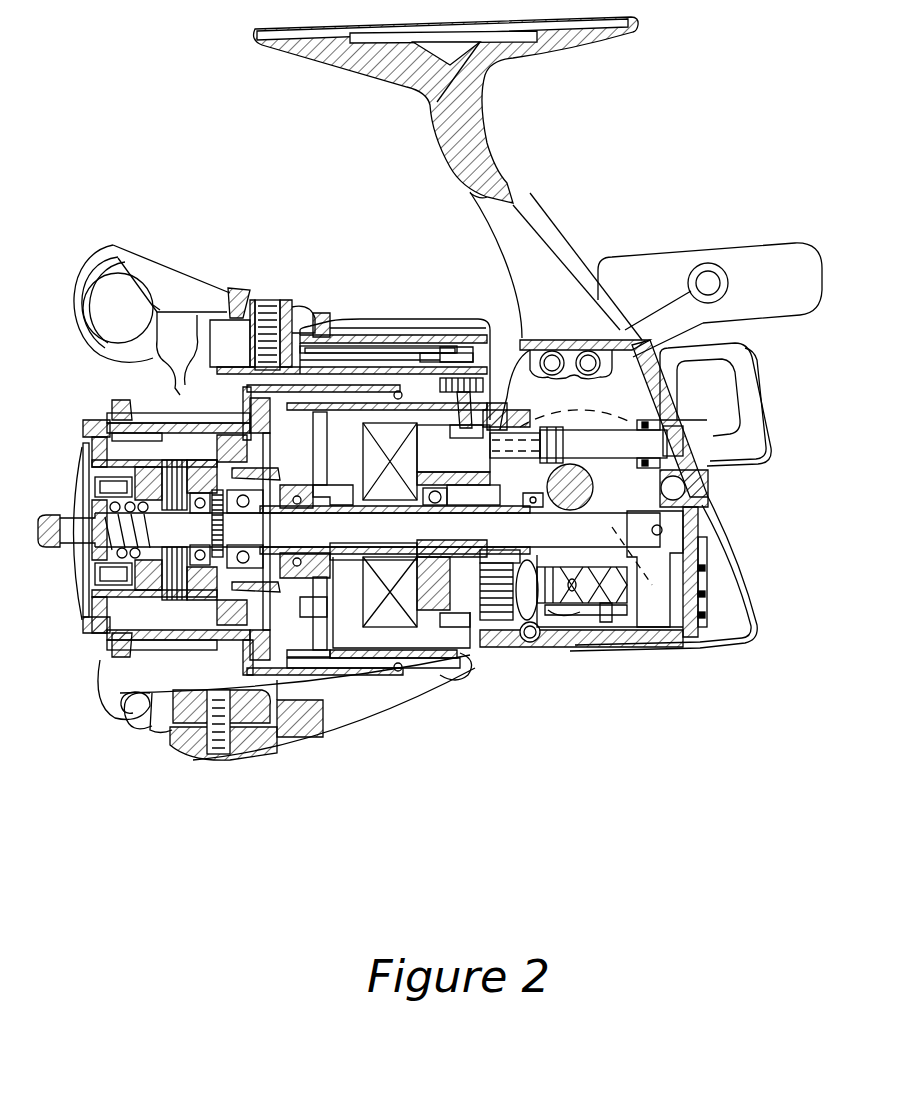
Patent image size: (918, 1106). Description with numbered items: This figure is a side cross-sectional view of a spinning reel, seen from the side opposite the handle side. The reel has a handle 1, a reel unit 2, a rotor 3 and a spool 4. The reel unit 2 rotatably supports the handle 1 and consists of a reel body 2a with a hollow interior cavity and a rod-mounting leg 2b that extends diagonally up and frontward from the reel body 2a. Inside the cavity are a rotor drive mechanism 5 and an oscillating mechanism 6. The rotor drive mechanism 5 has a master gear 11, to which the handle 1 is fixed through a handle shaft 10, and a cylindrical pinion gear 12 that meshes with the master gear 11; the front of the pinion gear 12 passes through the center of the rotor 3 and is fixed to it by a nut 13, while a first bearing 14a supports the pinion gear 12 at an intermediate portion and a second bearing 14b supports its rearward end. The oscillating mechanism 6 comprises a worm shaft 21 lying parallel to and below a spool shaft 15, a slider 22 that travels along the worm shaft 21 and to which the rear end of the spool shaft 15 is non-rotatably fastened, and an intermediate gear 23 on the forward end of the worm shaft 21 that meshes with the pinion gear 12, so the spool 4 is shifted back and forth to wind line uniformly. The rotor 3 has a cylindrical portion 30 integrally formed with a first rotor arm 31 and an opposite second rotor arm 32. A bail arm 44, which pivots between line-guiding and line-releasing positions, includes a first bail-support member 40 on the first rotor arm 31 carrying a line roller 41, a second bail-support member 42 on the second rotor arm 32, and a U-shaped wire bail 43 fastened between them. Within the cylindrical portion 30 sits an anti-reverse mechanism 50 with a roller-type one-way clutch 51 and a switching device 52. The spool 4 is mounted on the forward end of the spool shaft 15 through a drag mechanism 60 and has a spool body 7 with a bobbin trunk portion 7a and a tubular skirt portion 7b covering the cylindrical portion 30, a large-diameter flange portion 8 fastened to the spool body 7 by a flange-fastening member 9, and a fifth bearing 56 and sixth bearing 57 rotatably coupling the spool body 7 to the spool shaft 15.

The handle 1 is at (678, 298).
The reel unit 2 is at (743, 532).
The reel body 2a is at (713, 490).
The rod-mounting leg 2b is at (533, 207).
The rotor 3 is at (368, 677).
The spool 4 is at (215, 651).
The rotor drive mechanism 5 is at (603, 475).
The oscillating mechanism 6 is at (590, 620).
The spool body 7 is at (235, 727).
The bobbin trunk portion 7a is at (169, 722).
The skirt portion 7b is at (277, 680).
The large-diameter flange portion 8 is at (112, 667).
The flange-fastening member 9 is at (90, 642).
The handle shaft 10 is at (560, 470).
The master gear 11 is at (620, 630).
The pinion gear 12 is at (470, 553).
The nut 13 is at (330, 490).
The first bearing 14a is at (440, 480).
The second bearing 14b is at (537, 633).
The spool shaft 15 is at (652, 575).
The worm shaft 21 is at (620, 612).
The slider 22 is at (703, 622).
The intermediate gear 23 is at (500, 618).
The cylindrical portion 30 is at (383, 677).
The first rotor arm 31 is at (315, 318).
The second rotor arm 32 is at (310, 725).
The first bail-support member 40 is at (202, 283).
The line roller 41 is at (73, 287).
The second bail-support member 42 is at (165, 715).
The bail 43 is at (177, 387).
The bail arm 44 is at (130, 355).
The anti-reverse mechanism 50 is at (405, 420).
The roller-type one-way clutch 51 is at (430, 400).
The switching device 52 is at (577, 422).
The fifth bearing 56 is at (206, 427).
The sixth bearing 57 is at (318, 488).
The drag mechanism 60 is at (123, 718).